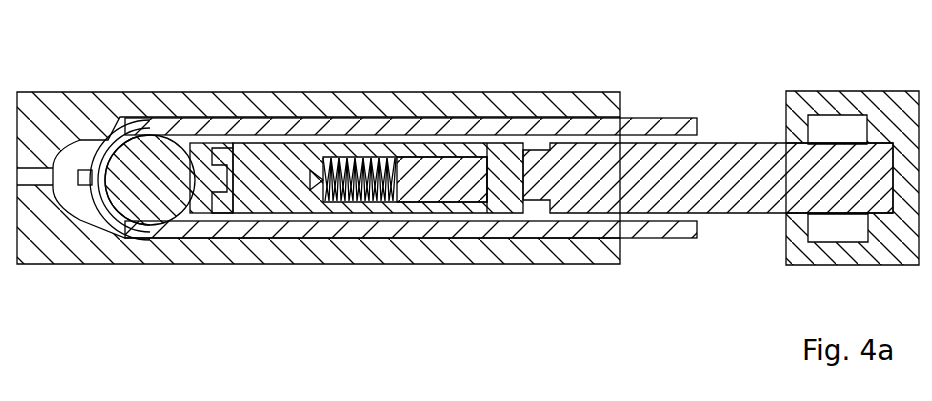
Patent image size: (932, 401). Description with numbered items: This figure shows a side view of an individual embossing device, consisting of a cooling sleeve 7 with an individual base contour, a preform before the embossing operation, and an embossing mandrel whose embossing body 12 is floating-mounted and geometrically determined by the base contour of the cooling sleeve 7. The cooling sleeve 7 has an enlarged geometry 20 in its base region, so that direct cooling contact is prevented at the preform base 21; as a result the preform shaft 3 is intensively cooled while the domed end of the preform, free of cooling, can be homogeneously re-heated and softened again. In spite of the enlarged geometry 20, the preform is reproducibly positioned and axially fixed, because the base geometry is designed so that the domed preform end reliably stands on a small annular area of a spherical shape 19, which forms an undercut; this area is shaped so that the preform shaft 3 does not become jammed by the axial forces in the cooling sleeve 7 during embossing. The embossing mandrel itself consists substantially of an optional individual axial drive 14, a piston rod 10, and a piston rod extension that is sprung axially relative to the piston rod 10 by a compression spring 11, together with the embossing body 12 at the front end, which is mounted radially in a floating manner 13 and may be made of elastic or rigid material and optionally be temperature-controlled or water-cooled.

The preform shaft 3 is at (262, 125).
The cooling sleeve 7 is at (417, 103).
The piston rod 10 is at (733, 178).
The compression spring 11 is at (362, 198).
The embossing body 12 is at (154, 172).
The floating mounting 13 is at (228, 198).
The individual axial drive 14 is at (848, 252).
The spherical shape 19 is at (128, 125).
The enlarged geometry 20 is at (88, 145).
The preform base 21 is at (108, 137).